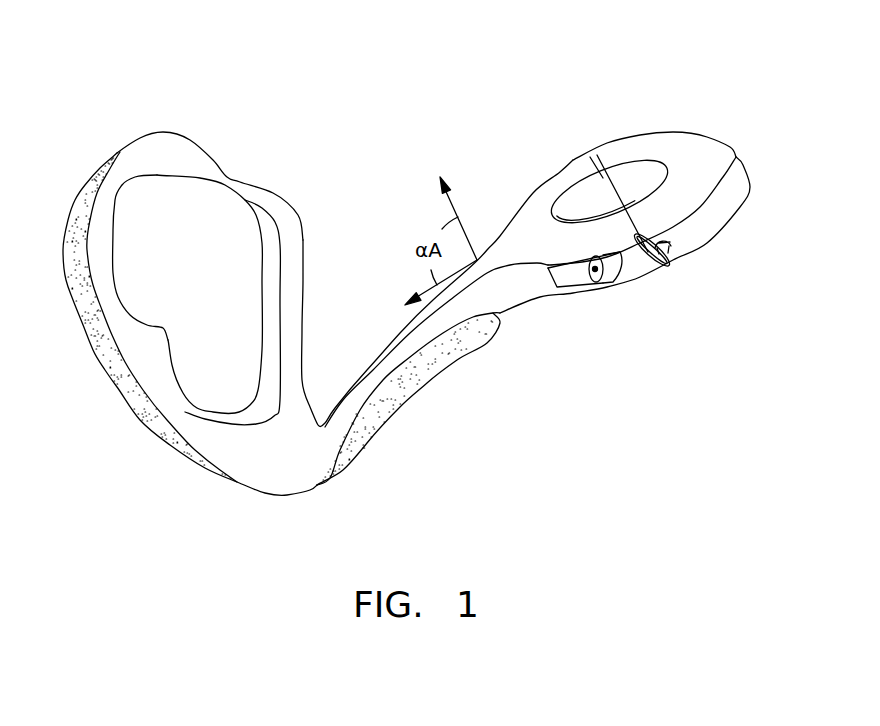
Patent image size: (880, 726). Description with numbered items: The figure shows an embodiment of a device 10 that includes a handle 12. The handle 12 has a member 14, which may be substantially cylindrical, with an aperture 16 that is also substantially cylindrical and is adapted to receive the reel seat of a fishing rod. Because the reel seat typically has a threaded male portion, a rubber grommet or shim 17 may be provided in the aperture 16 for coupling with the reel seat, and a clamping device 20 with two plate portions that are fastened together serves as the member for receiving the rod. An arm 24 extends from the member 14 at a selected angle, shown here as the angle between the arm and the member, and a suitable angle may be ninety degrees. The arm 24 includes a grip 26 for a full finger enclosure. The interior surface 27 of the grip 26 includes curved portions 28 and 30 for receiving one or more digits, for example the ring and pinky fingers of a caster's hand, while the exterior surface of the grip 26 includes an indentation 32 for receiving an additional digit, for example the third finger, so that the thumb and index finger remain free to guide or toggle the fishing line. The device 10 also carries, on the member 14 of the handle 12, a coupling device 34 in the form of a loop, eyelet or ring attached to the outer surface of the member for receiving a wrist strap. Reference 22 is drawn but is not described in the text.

The device 10 is at (213, 66).
The handle 12 is at (545, 338).
The member 14 is at (693, 140).
The aperture 16 is at (577, 200).
The rubber grommet or shim 17 is at (662, 182).
The clamping device 20 is at (685, 290).
The lip 22 is at (583, 200).
The arm 24 is at (417, 373).
The grip 26 is at (212, 495).
The interior surface 27 is at (225, 423).
The curved portion 28 is at (202, 377).
The curved portion 30 is at (152, 300).
The indentation 32 is at (232, 172).
The coupling device 34 is at (670, 265).